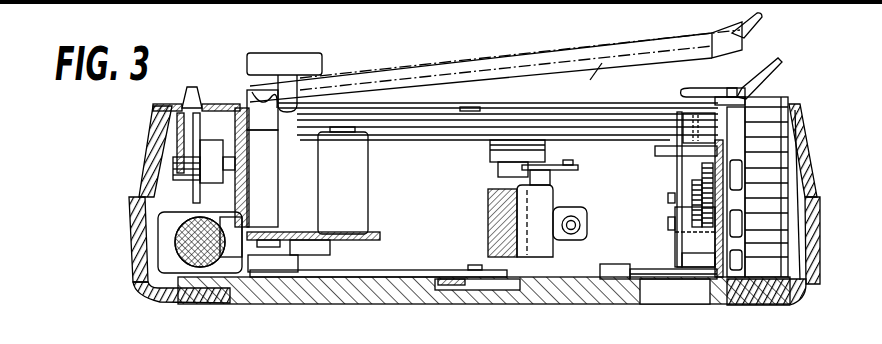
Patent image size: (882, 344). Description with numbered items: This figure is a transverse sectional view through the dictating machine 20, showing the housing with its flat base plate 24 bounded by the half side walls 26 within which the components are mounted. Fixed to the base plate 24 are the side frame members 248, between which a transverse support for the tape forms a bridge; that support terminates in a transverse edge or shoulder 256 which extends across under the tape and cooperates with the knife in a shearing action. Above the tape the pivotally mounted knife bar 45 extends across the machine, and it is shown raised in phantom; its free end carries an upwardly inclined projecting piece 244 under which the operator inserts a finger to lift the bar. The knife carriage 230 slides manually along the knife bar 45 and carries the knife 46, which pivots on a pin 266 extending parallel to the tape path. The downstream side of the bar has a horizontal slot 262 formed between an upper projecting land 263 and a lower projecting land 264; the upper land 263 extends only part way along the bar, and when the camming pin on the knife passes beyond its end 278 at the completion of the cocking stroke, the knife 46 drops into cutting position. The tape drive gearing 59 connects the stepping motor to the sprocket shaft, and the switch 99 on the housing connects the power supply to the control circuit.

The dictating machine 20 is at (854, 193).
The base plate 24 is at (412, 287).
The half side walls 26 is at (137, 237).
The knife bar 45 is at (467, 80).
The knife 46 is at (292, 100).
The gearing 59 is at (685, 171).
The switch 99 is at (178, 110).
The knife carriage 230 is at (295, 48).
The projecting piece 244 is at (778, 66).
The side frame members 248 is at (248, 210).
The transverse edge or shoulder 256 is at (400, 135).
The horizontal slot 262 is at (637, 98).
The upper projecting land 263 is at (580, 93).
The lower projecting land 264 is at (458, 108).
The pin 266 is at (272, 96).
The end of the camming land 278 is at (680, 95).